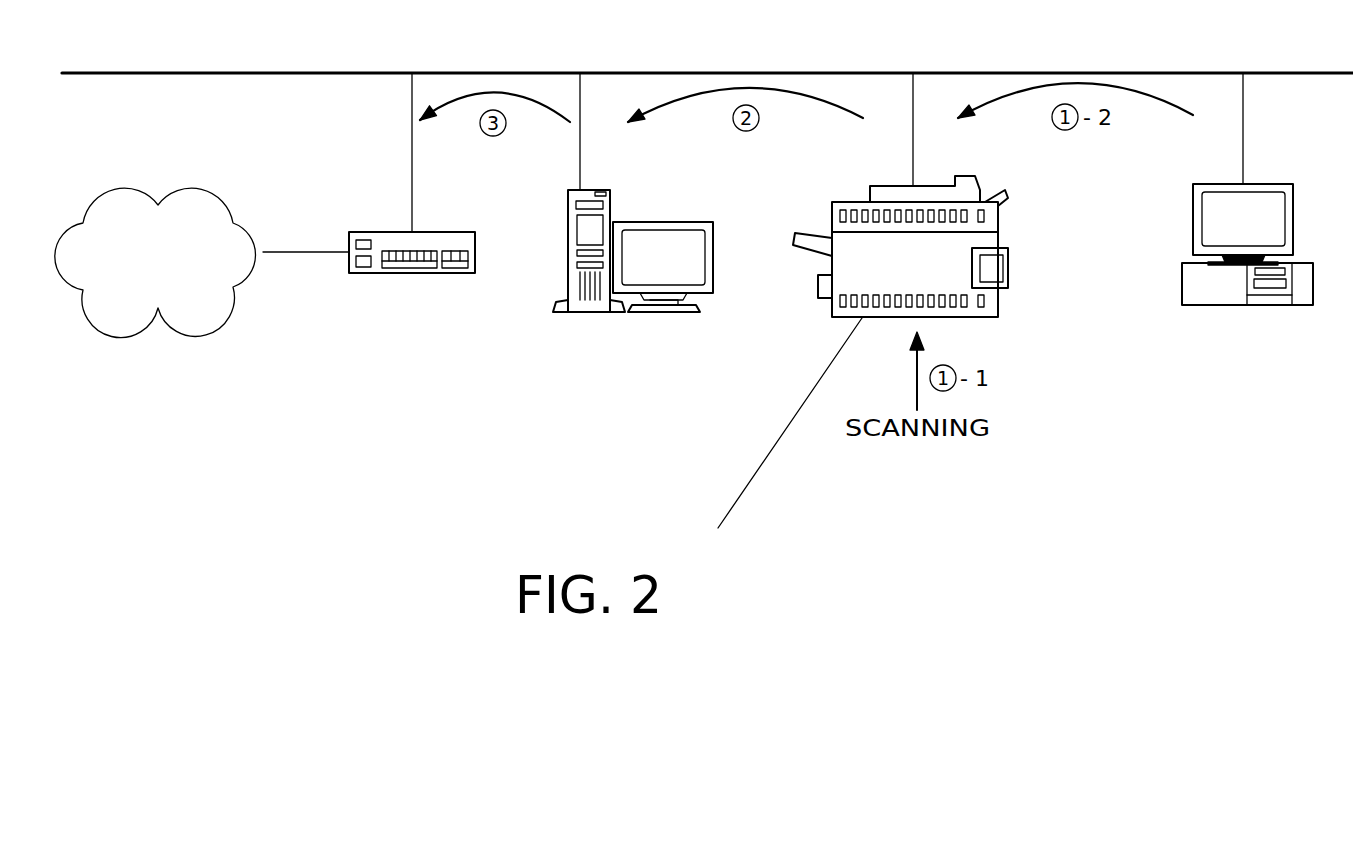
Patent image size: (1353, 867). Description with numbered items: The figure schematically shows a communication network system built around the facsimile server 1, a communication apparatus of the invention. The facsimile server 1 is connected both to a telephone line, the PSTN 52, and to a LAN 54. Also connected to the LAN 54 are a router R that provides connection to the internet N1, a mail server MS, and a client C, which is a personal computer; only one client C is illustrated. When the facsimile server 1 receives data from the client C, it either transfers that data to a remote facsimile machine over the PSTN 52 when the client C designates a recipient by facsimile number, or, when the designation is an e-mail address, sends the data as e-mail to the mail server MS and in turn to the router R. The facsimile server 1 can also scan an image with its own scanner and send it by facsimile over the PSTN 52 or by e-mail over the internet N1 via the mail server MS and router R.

The facsimile server 1 is at (998, 232).
The telephone line (PSTN) 52 is at (748, 487).
The LAN 54 is at (476, 72).
The internet N1 is at (183, 322).
The router R is at (418, 273).
The mail server MS is at (592, 312).
The client C is at (1293, 218).